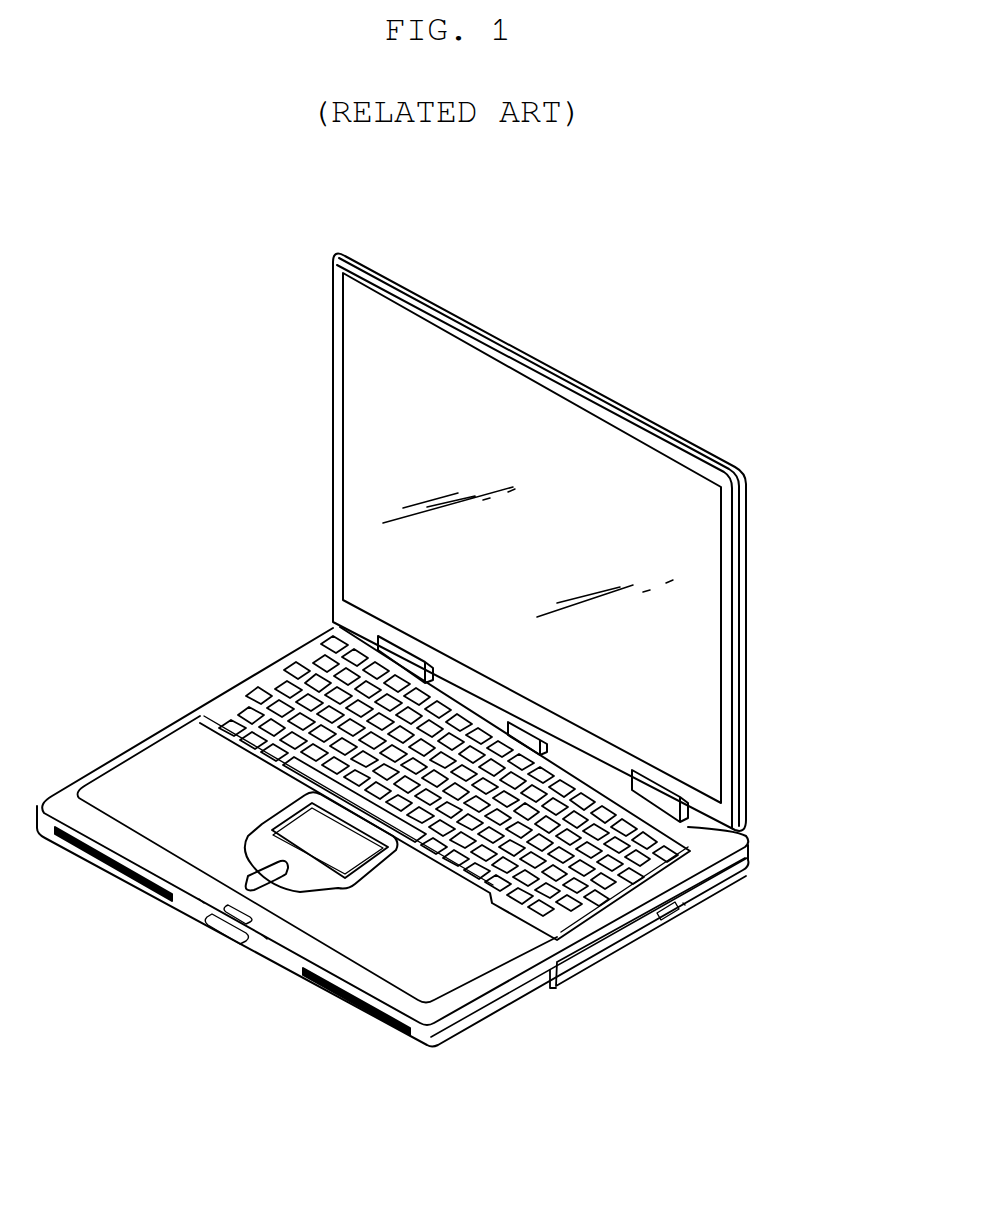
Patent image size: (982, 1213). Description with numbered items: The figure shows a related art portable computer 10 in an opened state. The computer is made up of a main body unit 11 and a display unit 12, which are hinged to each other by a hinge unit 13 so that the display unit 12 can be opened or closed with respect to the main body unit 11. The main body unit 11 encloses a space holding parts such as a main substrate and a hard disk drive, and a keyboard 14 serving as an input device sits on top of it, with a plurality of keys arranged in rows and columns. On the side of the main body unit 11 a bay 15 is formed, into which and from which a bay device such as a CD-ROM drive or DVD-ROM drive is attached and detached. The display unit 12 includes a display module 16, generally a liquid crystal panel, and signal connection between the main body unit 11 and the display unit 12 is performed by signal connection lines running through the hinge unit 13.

The portable computer 10 is at (833, 304).
The main body unit 11 is at (147, 763).
The display unit 12 is at (747, 618).
The hinge unit 13 is at (352, 640).
The keyboard 14 is at (587, 843).
The bay 15 is at (598, 955).
The display module 16 is at (400, 455).